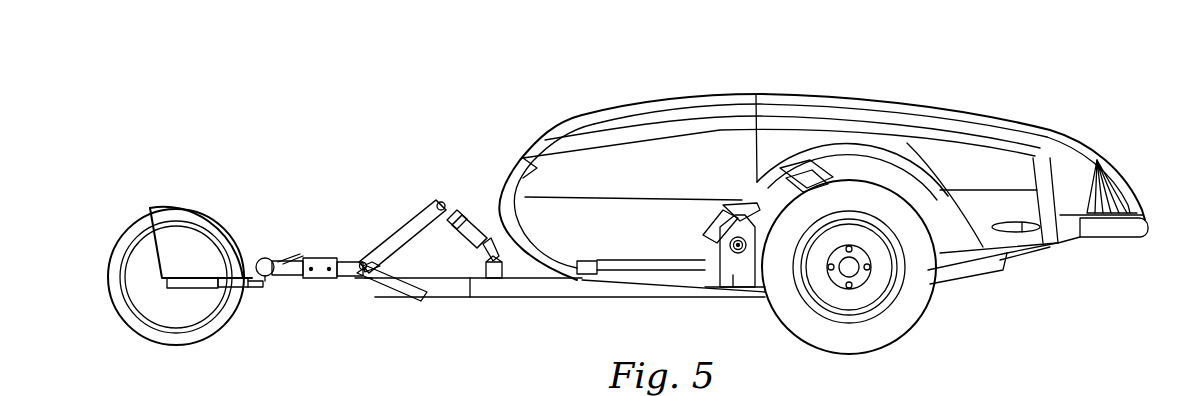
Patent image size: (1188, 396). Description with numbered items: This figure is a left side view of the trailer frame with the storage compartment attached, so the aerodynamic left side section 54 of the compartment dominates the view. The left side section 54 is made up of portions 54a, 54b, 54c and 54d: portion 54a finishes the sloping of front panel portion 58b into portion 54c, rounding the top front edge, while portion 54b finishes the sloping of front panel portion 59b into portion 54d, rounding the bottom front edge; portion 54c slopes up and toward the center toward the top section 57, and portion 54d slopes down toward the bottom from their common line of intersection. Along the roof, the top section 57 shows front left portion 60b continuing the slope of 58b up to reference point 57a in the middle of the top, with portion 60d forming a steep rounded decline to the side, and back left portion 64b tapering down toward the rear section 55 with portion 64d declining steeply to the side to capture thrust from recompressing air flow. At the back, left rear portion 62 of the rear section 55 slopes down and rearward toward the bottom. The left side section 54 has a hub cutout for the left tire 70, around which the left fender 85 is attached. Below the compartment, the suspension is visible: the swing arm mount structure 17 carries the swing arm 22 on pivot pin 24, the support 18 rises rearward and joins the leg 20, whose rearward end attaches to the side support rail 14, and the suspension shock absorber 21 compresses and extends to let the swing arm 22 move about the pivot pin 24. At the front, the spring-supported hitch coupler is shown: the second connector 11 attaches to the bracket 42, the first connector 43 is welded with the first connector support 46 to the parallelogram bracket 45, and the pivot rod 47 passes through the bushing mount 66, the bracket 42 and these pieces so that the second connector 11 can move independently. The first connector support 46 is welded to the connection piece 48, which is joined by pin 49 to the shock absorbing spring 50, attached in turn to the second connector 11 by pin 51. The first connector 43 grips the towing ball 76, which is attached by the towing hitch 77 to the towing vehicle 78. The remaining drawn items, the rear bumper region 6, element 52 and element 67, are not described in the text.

The rear bumper 6 is at (1140, 198).
The second connector 11 is at (457, 298).
The side support rail 14 is at (963, 274).
The swing arm mount structure 17 is at (733, 278).
The support 18 is at (710, 226).
The leg 20 is at (824, 170).
The suspension shock absorber 21 is at (802, 181).
The swing arm 22 is at (757, 250).
The pivot pin 24 is at (734, 212).
The bracket 42 is at (393, 299).
The first connector 43 is at (312, 260).
The parallelogram bracket 45 is at (355, 274).
The first connector support 46 is at (403, 237).
The pivot rod 47 is at (363, 260).
The connection piece 48 is at (440, 203).
The pin 49 is at (453, 209).
The shock absorbing spring 50 is at (466, 236).
The pin 51 is at (497, 288).
The shock absorber lower mount 52 is at (489, 271).
The left side section 54 is at (676, 262).
The portion 54a is at (516, 166).
The portion 54b is at (547, 242).
The portion 54c is at (602, 182).
The portion 54d is at (602, 232).
The rear section 55 is at (1124, 175).
The top section 57 is at (728, 92).
The reference point 57a is at (758, 95).
The portion of first front panel member 58b is at (512, 170).
The portion of second front panel member 59b is at (523, 244).
The front left portion 60b is at (581, 115).
The portion 60d is at (668, 123).
The left rear portion 62 is at (1113, 178).
The back left portion 64b is at (936, 110).
The portion 64d is at (857, 121).
The bushing mount 66 is at (363, 272).
The lower frame member 67 is at (597, 286).
The left tire 70 is at (925, 324).
The towing ball 76 is at (269, 292).
The towing hitch 77 is at (233, 288).
The towing vehicle 78 is at (195, 205).
The left fender 85 is at (951, 209).